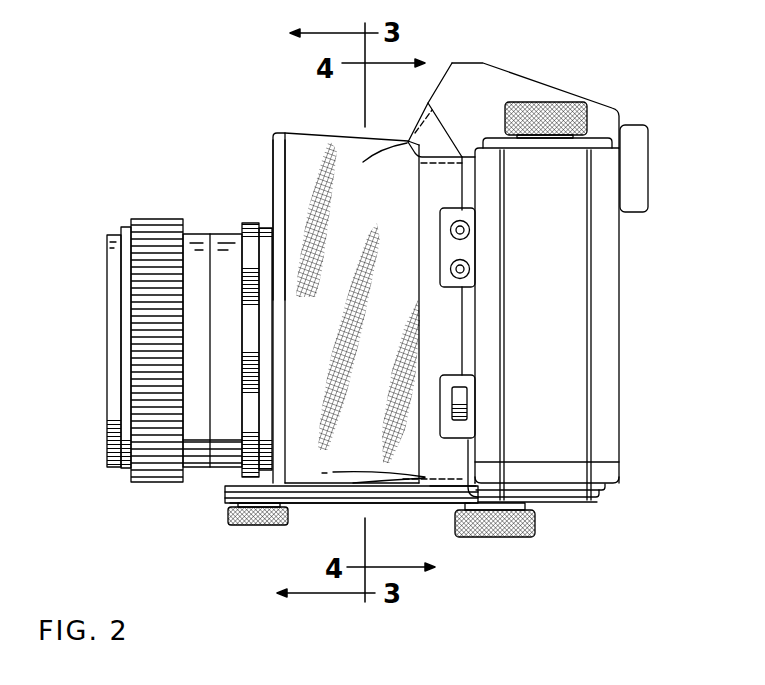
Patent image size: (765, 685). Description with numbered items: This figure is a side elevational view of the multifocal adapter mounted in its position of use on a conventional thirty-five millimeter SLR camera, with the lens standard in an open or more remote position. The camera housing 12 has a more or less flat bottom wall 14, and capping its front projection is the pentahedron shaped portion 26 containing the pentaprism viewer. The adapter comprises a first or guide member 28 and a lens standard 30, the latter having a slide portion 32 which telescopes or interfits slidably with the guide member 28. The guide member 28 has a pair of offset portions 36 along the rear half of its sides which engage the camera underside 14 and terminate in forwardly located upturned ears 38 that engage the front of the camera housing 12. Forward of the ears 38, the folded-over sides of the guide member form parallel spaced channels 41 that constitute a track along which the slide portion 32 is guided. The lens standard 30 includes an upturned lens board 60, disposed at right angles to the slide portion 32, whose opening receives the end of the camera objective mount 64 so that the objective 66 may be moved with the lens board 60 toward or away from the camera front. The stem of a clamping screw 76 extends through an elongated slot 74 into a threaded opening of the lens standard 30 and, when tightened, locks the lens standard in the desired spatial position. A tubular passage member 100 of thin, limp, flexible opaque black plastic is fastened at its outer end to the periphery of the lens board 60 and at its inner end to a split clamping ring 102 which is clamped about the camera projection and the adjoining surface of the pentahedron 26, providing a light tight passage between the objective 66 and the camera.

The housing 12 is at (645, 115).
The bottom wall 14 is at (570, 501).
The pentahedron shaped portion 26 is at (530, 80).
The guide member 28 is at (413, 511).
The lens standard 30 is at (273, 162).
The slide portion 32 is at (440, 503).
The offset portions 36 is at (592, 491).
The upturned ears 38 is at (472, 450).
The channels 41 is at (342, 494).
The lens board 60 is at (284, 192).
The objective mount 64 is at (212, 460).
The objective 66 is at (108, 295).
The elongated slot 74 is at (522, 538).
The clamping screw 76 is at (237, 527).
The tubular passage member 100 is at (378, 218).
The split clamping ring 102 is at (423, 123).